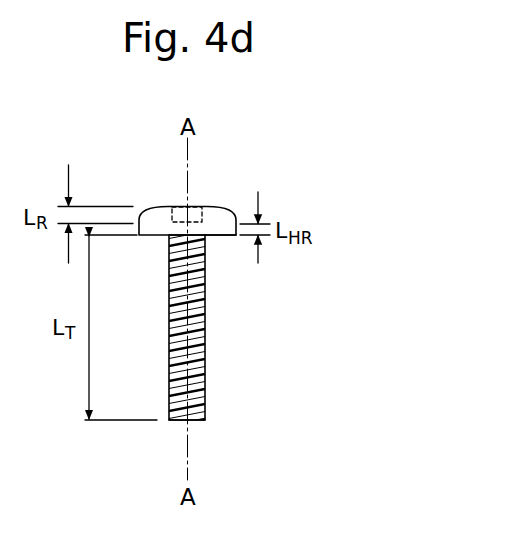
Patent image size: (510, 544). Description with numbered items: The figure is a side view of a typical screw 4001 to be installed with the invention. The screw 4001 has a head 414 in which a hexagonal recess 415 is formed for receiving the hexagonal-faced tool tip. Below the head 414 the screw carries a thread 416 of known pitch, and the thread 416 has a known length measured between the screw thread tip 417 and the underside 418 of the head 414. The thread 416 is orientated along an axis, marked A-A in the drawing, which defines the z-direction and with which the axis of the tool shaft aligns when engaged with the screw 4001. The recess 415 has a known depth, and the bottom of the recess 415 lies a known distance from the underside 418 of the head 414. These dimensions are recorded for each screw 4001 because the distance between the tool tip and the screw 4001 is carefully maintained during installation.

The head 414 is at (213, 206).
The hexagonal recess 415 is at (179, 203).
The thread 416 is at (207, 342).
The screw thread tip 417 is at (200, 420).
The underside of the head 418 is at (223, 237).
The screw 4001 is at (245, 310).